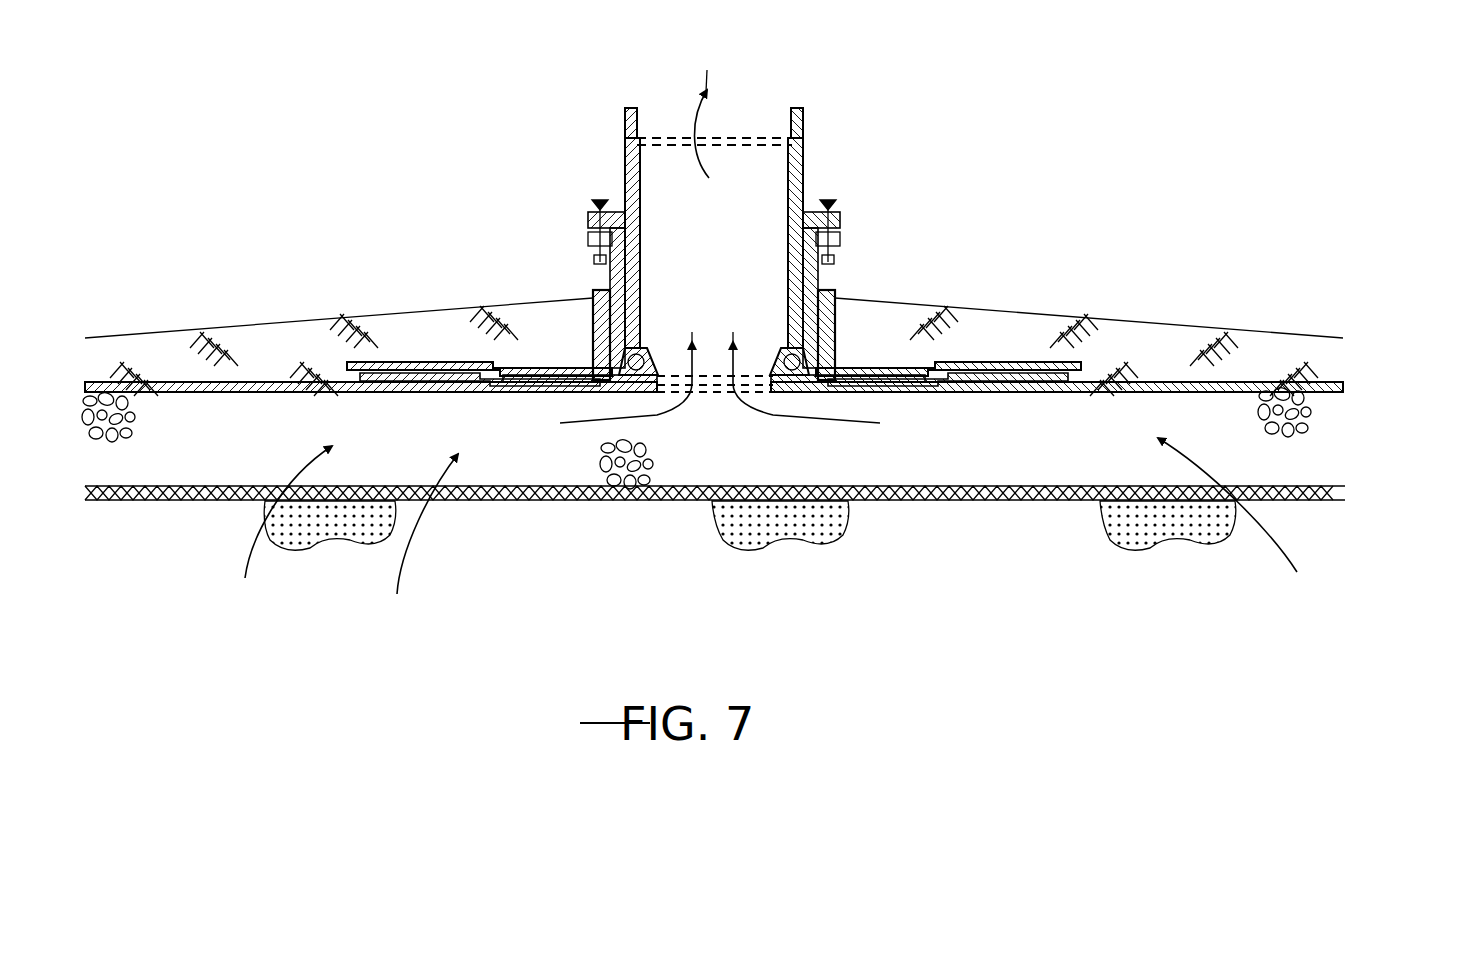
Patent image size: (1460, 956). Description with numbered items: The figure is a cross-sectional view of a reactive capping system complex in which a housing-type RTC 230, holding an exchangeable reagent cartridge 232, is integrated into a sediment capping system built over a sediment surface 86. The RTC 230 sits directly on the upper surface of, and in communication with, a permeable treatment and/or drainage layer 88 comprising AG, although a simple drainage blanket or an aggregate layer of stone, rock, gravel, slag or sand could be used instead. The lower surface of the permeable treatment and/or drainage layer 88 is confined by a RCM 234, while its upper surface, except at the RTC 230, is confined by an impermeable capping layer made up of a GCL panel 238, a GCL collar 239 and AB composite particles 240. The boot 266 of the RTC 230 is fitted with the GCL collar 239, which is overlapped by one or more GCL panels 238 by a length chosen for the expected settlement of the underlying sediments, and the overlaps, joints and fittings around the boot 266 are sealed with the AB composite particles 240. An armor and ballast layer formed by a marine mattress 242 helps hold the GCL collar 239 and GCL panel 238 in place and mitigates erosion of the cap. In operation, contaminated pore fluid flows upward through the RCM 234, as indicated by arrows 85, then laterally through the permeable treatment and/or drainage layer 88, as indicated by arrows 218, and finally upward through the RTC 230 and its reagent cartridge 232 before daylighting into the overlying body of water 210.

The overlying body of water 210 is at (460, 57).
The RTC 230 is at (788, 88).
The exchangeable reagent cartridge 232 is at (806, 176).
The boot 266 is at (606, 288).
The AB composite particles 240 is at (822, 296).
The GCL panel 238 is at (265, 380).
The GCL collar 239 is at (505, 360).
The marine mattress 242 is at (1122, 330).
The arrows 218 is at (657, 415).
The RCM 234 is at (488, 502).
The permeable treatment and/or drainage layer 88 is at (1362, 382).
The sediment surface 86 is at (1362, 502).
The arrows 85 is at (398, 558).